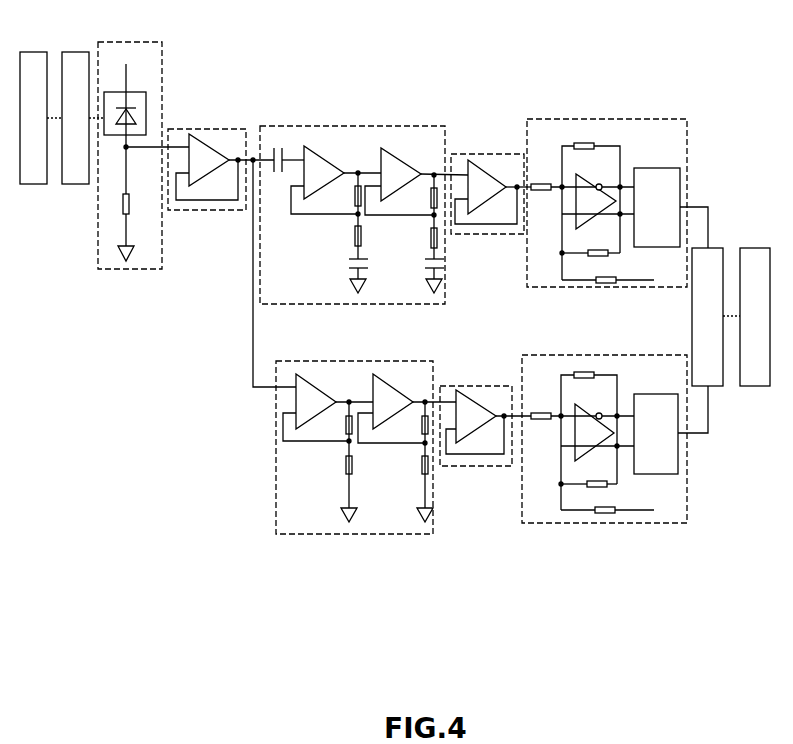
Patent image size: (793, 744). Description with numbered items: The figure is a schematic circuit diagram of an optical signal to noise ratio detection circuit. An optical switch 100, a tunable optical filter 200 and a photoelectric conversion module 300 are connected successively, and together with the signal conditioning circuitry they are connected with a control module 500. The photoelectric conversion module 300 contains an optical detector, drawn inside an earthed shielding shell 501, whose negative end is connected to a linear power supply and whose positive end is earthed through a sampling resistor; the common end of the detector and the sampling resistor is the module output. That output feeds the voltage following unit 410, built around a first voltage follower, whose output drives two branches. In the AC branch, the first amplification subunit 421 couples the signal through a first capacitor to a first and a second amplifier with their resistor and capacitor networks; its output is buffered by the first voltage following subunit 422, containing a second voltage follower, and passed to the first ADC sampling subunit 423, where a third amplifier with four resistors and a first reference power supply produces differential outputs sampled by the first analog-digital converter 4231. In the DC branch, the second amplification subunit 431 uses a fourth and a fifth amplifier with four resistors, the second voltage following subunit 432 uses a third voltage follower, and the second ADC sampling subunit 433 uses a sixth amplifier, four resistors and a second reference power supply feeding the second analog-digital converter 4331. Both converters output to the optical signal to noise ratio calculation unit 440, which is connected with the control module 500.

The optical switch 100 is at (40, 51).
The tunable optical filter 200 is at (80, 51).
The photoelectric conversion module 300 is at (131, 139).
The photodiode 501 is at (130, 90).
The voltage following unit 410 is at (230, 128).
The first amplification subunit 421 is at (393, 126).
The first voltage following subunit 422 is at (465, 153).
The first ADC sampling subunit 423 is at (607, 186).
The first analog-digital converter 4231 is at (643, 167).
The optical signal to noise ratio calculation unit 440 is at (716, 247).
The control module 500 is at (747, 247).
The second amplification subunit 431 is at (275, 484).
The second voltage following subunit 432 is at (502, 465).
The second ADC sampling subunit 433 is at (604, 457).
The second analog-digital converter 4331 is at (647, 393).